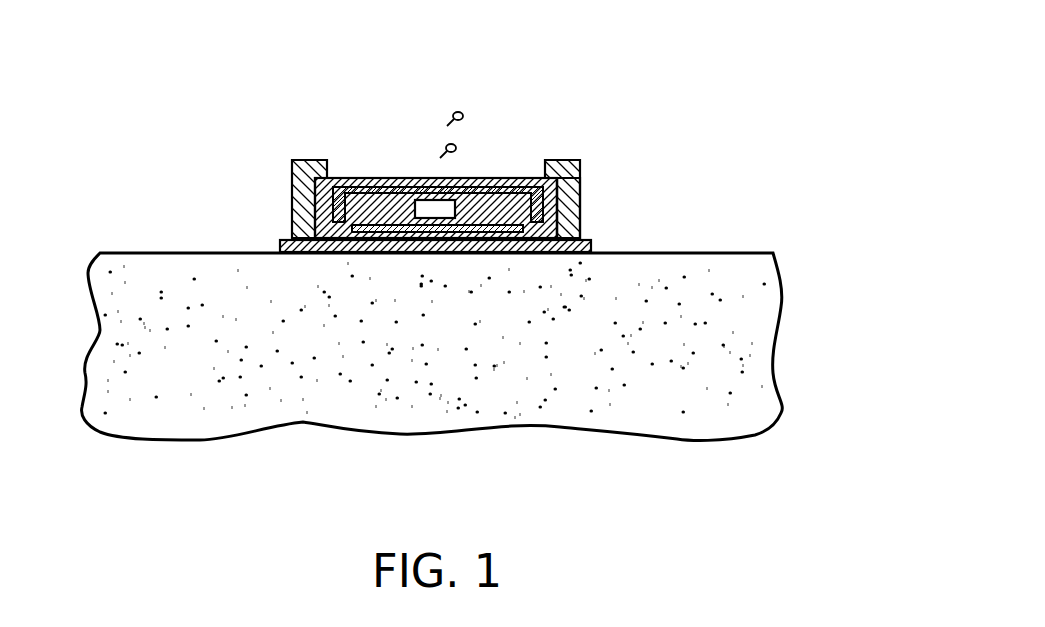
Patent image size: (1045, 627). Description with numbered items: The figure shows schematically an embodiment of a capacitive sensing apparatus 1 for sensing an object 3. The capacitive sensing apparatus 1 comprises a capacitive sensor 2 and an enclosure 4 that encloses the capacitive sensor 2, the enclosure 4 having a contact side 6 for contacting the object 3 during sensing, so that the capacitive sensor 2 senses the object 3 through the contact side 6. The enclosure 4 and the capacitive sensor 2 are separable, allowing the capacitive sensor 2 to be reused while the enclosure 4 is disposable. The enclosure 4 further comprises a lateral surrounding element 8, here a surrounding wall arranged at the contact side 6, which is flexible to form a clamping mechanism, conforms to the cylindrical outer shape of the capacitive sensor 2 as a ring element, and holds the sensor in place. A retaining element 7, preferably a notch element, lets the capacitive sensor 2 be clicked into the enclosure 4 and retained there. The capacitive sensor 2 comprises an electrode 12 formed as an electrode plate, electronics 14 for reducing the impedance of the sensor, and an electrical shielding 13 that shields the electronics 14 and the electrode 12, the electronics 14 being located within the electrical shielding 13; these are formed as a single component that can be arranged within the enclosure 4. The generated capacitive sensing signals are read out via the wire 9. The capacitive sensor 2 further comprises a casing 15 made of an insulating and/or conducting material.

The capacitive sensing apparatus 1 is at (660, 112).
The capacitive sensor 2 is at (521, 162).
The object 3 is at (768, 345).
The enclosure 4 is at (597, 183).
The contact side 6 is at (272, 242).
The retaining element 7 is at (550, 160).
The lateral surrounding element 8 is at (580, 217).
The wire 9 is at (435, 200).
The electrode 12 is at (397, 225).
The electrical shielding 13 is at (498, 187).
The electronics 14 is at (427, 200).
The casing 15 is at (345, 178).